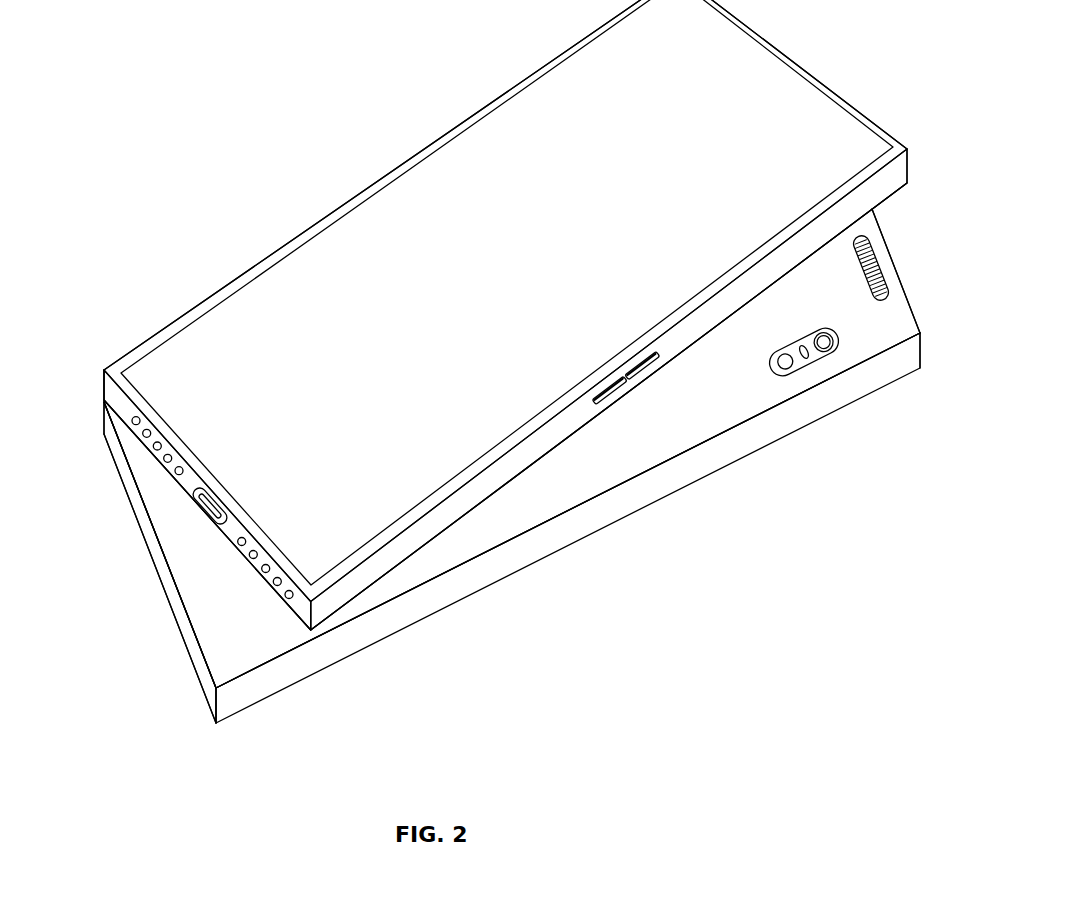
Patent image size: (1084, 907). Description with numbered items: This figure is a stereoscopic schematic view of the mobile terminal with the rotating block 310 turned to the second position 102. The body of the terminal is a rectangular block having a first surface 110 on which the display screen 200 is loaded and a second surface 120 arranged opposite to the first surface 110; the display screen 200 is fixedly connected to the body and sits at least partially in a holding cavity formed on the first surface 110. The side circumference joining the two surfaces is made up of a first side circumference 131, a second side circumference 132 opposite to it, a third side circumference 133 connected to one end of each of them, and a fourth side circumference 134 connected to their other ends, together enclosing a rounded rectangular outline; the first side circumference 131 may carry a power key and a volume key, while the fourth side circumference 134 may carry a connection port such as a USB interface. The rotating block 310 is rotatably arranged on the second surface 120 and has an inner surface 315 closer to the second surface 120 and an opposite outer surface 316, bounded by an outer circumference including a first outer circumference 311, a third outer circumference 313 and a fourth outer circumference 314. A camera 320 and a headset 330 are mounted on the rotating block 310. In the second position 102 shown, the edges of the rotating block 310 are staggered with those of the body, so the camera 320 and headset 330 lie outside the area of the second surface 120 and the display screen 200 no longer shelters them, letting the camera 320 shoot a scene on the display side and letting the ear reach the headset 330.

The second position 102 is at (366, 662).
The first surface 110 is at (468, 120).
The second surface 120 is at (880, 203).
The first side circumference 131 is at (852, 213).
The second side circumference 132 is at (290, 241).
The third side circumference 133 is at (802, 62).
The fourth side circumference 134 is at (116, 404).
The display screen 200 is at (407, 193).
The rotating block 310 is at (630, 497).
The first outer circumference 311 is at (450, 582).
The third outer circumference 313 is at (921, 352).
The fourth outer circumference 314 is at (181, 620).
The inner surface 315 is at (232, 653).
The outer surface 316 is at (208, 700).
The camera 320 is at (827, 349).
The headset 330 is at (883, 300).